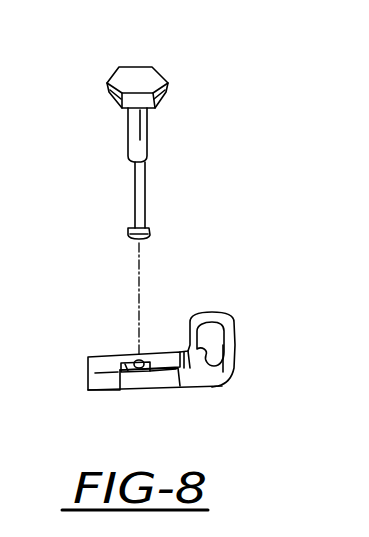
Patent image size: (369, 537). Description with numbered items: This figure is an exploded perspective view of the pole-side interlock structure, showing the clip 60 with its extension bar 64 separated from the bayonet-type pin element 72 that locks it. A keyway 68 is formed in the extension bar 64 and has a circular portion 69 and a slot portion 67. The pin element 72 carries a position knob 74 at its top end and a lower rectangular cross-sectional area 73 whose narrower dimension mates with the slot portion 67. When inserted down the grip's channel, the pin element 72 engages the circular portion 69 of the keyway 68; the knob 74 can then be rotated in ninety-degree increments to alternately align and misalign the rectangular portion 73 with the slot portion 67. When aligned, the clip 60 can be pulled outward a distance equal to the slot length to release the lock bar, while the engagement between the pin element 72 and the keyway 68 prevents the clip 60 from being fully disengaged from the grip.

The clip 60 is at (220, 380).
The extension bar 64 is at (98, 385).
The slot portion 67 is at (120, 377).
The keyway 68 is at (148, 355).
The circular portion 69 is at (160, 355).
The pin element 72 is at (148, 140).
The rectangular cross-sectional area 73 is at (135, 192).
The position knob 74 is at (133, 73).